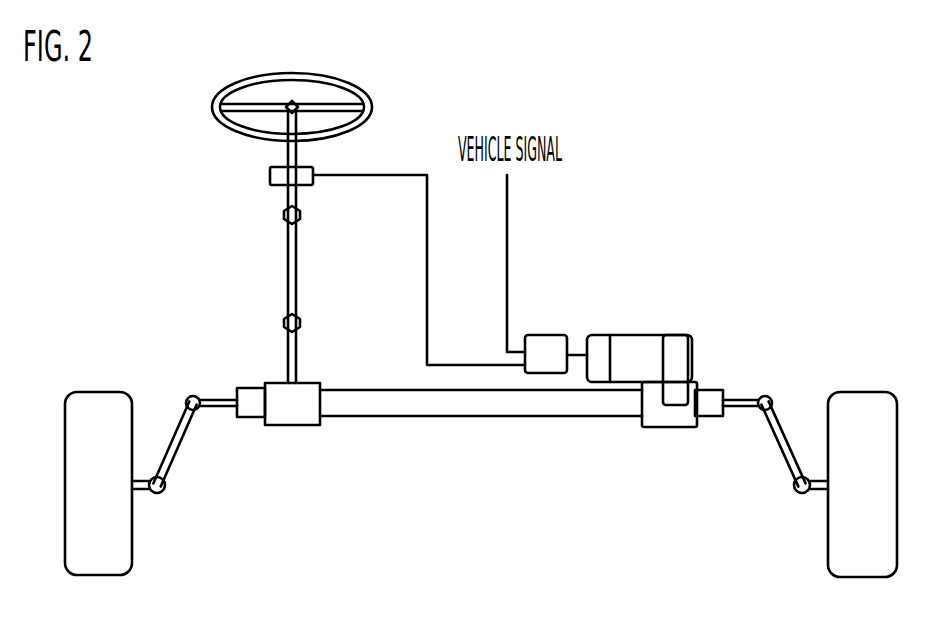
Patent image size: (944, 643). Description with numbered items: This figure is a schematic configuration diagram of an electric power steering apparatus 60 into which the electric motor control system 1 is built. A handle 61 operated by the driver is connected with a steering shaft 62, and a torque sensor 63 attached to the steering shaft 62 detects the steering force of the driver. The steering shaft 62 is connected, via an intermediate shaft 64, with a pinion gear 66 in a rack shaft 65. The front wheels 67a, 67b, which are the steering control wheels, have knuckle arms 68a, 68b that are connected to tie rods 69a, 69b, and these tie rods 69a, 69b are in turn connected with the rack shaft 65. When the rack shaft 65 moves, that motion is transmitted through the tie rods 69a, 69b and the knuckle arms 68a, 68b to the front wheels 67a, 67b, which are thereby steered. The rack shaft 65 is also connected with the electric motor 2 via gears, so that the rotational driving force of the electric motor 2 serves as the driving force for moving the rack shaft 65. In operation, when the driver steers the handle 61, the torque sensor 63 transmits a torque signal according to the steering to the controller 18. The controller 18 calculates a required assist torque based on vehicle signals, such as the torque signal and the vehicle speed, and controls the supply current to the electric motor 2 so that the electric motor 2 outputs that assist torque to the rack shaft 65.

The electric motor control system 1 is at (612, 288).
The electric motor 2 is at (645, 335).
The controller 18 is at (543, 335).
The electric power steering apparatus 60 is at (726, 140).
The handle 61 is at (373, 103).
The steering shaft 62 is at (287, 198).
The torque sensor 63 is at (268, 174).
The intermediate shaft 64 is at (287, 268).
The rack shaft 65 is at (490, 420).
The pinion gear 66 is at (303, 390).
The front wheel 67a is at (135, 540).
The front wheel 67b is at (827, 533).
The knuckle arm 68a is at (185, 445).
The knuckle arm 68b is at (775, 448).
The tie rod 69a is at (210, 396).
The tie rod 69b is at (742, 396).